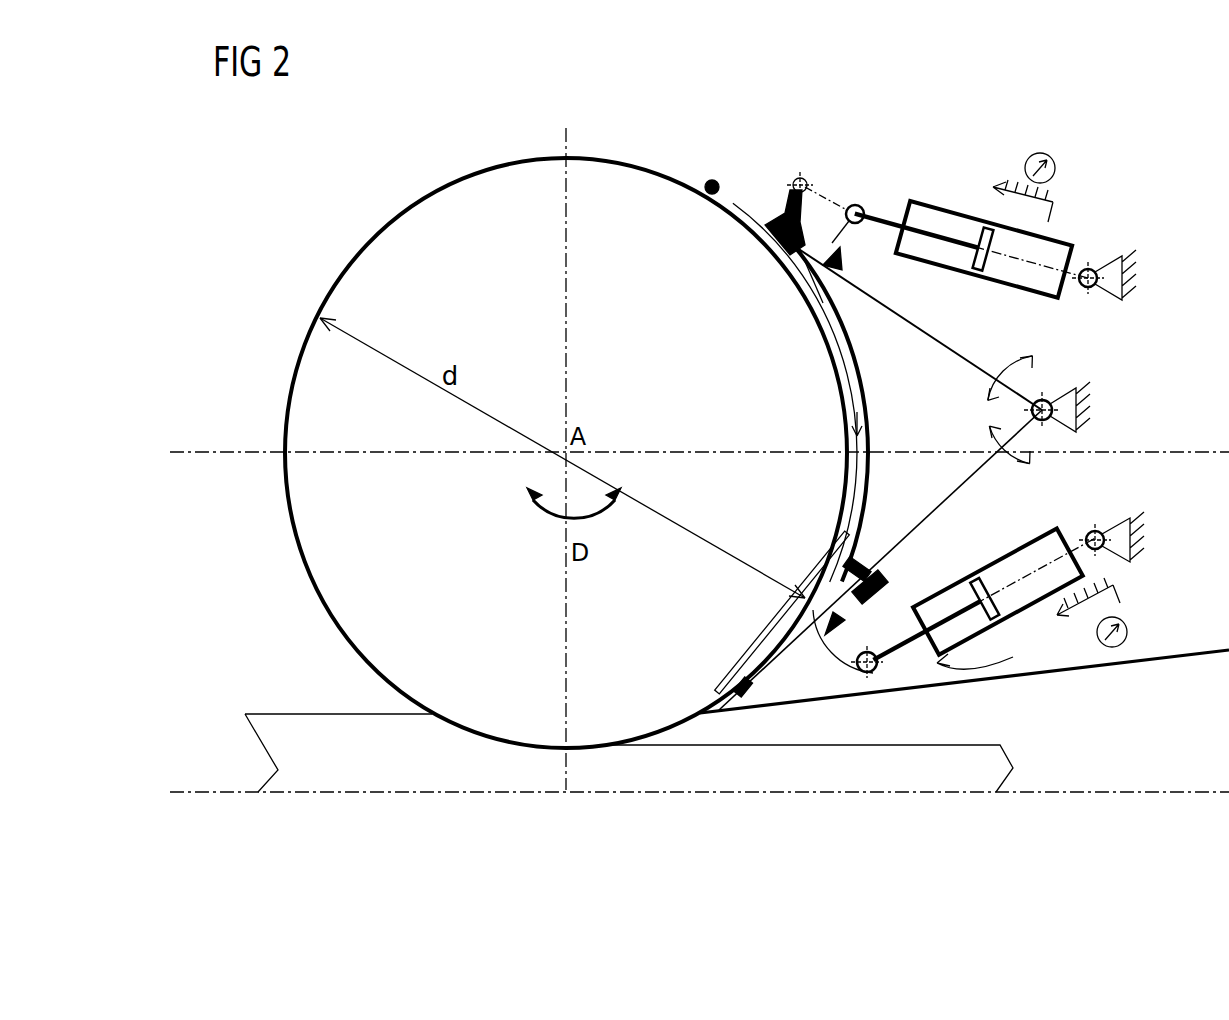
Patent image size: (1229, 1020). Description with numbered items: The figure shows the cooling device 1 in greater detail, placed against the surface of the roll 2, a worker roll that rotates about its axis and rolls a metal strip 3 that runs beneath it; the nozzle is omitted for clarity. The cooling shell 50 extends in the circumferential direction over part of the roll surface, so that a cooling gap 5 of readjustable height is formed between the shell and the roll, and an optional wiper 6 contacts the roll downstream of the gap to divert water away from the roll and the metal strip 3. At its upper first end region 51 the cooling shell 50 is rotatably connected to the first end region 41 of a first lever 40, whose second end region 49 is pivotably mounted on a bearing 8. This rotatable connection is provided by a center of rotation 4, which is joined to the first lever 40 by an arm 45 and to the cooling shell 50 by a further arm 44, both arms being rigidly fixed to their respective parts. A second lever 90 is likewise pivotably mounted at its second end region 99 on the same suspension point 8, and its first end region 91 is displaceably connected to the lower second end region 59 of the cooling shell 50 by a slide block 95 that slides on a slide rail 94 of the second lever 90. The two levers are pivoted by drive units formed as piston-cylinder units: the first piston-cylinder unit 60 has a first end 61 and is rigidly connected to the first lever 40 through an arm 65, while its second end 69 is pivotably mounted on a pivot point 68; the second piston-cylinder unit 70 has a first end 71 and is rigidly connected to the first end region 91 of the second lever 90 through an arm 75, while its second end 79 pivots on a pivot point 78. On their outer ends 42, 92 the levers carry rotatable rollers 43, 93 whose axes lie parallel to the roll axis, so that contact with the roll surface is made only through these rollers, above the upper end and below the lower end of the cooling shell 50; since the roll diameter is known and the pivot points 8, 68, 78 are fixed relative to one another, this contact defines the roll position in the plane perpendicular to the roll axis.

The cooling device 1 is at (1072, 186).
The roll 2 is at (427, 190).
The metal strip 3 is at (330, 713).
The center of rotation 4 is at (800, 178).
The cooling gap 5 is at (837, 477).
The wiper 6 is at (1130, 656).
The bearing / suspension point 8 is at (1058, 412).
The first lever 40 is at (940, 325).
The first end region of the first lever 41 is at (745, 200).
The end of the first lever 42 is at (708, 205).
The roller on the end of the first lever 43 is at (712, 180).
The arm for connecting the cooling shell to the center of rotation 44 is at (820, 197).
The arm for connecting the first lever to the center of rotation 45 is at (785, 212).
The second end region of the first lever 49 is at (1000, 372).
The cooling shell 50 is at (843, 403).
The first end region of the cooling shell 51 is at (790, 270).
The second end region of the cooling shell 59 is at (822, 565).
The first drive unit / piston-cylinder unit 60 is at (952, 202).
The first end of the first piston-cylinder unit 61 is at (880, 212).
The arm 65 is at (845, 258).
The pivot point of the first piston-cylinder unit 68 is at (1125, 258).
The second end of the first piston-cylinder unit 69 is at (1090, 266).
The second drive unit / piston-cylinder unit 70 is at (992, 630).
The first end of the second piston-cylinder unit 71 is at (878, 672).
The arm 75 is at (860, 645).
The pivot point of the second piston-cylinder unit 78 is at (1130, 518).
The second end of the second piston-cylinder unit 79 is at (1090, 526).
The second lever 90 is at (935, 545).
The first end region of the second lever 91 is at (788, 635).
The end of the second lever 92 is at (733, 678).
The roller on the end of the second lever 93 is at (735, 690).
The slide rail 94 is at (893, 565).
The slide block 95 is at (866, 565).
The second end region of the second lever 99 is at (977, 477).